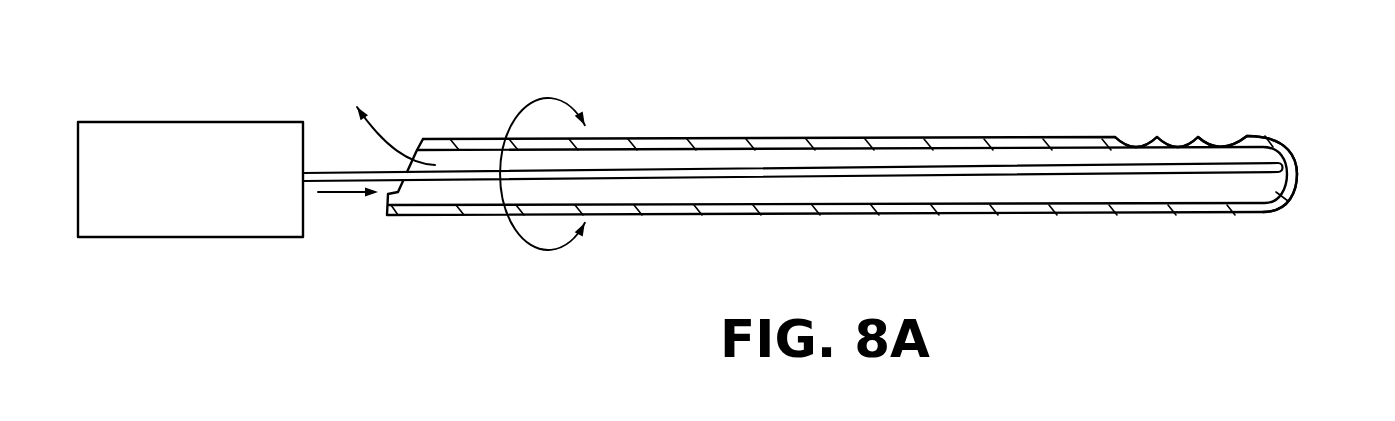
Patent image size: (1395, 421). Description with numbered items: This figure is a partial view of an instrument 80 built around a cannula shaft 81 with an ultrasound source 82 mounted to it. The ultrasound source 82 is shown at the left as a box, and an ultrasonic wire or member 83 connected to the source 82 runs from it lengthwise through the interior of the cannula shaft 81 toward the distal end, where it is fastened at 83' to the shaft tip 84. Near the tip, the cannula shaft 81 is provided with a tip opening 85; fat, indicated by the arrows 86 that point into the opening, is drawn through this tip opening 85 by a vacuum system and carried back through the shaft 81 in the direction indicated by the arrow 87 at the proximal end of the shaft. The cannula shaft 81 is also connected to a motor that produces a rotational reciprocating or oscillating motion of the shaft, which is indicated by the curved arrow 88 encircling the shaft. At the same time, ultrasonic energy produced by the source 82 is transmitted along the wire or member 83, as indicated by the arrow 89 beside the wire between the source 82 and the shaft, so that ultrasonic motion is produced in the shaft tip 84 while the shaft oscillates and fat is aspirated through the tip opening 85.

The instrument 80 is at (837, 138).
The cannula shaft 81 is at (728, 138).
The ultrasound source 82 is at (158, 122).
The ultrasonic wire or member 83 is at (793, 214).
The fastening point 83' is at (1309, 133).
The shaft tip 84 is at (1299, 182).
The tip opening 85 is at (1178, 148).
The arrows indicating fat 86 is at (1157, 123).
The arrow indicating vacuum flow 87 is at (405, 160).
The arrow indicating rotational reciprocating motion 88 is at (560, 100).
The arrow indicating ultrasonic energy transmission 89 is at (345, 193).